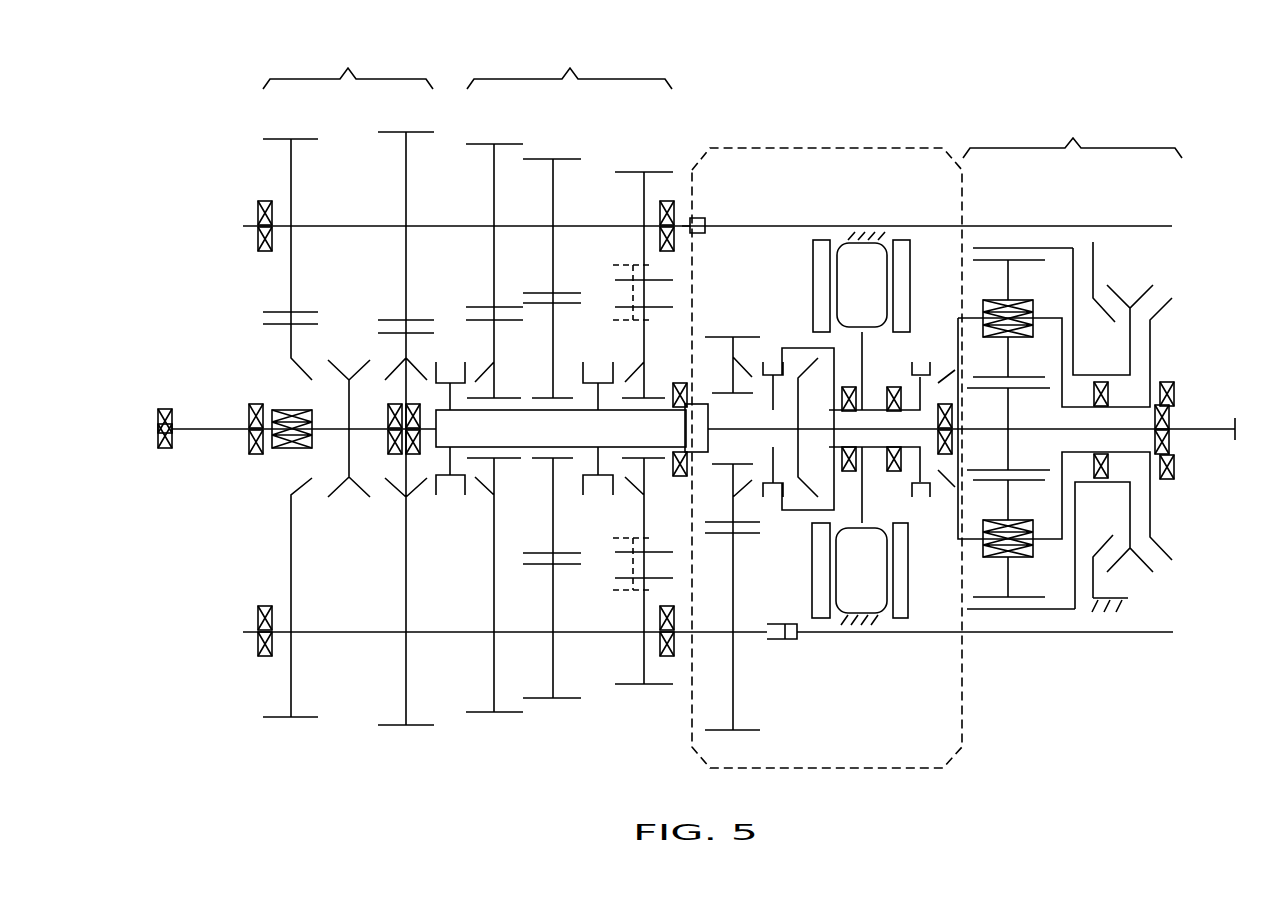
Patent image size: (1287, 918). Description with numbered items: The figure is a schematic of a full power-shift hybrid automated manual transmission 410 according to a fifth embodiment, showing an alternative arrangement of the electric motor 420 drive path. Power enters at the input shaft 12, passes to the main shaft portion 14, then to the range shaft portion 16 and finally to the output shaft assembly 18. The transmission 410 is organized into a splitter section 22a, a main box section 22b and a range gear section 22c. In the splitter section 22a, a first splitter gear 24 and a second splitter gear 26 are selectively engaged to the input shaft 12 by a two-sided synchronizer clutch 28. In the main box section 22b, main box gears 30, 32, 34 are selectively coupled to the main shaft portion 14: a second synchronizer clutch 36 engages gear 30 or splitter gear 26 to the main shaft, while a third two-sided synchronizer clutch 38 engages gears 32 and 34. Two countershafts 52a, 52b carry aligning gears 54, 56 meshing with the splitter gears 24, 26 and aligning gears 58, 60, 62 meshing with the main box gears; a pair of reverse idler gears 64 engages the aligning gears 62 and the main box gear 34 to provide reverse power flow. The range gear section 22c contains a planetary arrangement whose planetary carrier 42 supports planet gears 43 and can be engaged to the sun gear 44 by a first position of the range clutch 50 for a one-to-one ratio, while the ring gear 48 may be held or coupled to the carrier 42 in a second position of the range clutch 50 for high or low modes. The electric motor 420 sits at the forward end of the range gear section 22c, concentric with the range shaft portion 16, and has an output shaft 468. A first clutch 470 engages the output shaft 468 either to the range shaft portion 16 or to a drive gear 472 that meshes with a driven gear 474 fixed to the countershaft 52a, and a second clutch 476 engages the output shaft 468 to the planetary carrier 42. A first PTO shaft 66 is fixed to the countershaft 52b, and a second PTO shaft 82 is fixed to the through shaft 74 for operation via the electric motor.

The input shaft 12 is at (215, 430).
The main shaft portion 14 is at (523, 410).
The range shaft portion 16 is at (1065, 430).
The output shaft assembly 18 is at (1198, 428).
The splitter section 22a is at (348, 67).
The main box section 22b is at (569, 67).
The range gear section 22c is at (1072, 136).
The first splitter gear 24 is at (303, 324).
The second splitter gear 26 is at (414, 333).
The two-sided synchronizer clutch 28 is at (350, 506).
The main box gear 30 is at (503, 320).
The main box gear 32 is at (563, 303).
The main box gear 34 is at (665, 307).
The second synchronizer clutch 36 is at (450, 514).
The third two-sided synchronizer clutch 38 is at (598, 514).
The planetary carrier 42 is at (960, 318).
The planet gears 43 is at (983, 258).
The sun gear 44 is at (1015, 390).
The ring gear 48 is at (1052, 248).
The range clutch 50 is at (1148, 272).
The countershaft 52a is at (327, 632).
The countershaft 52b is at (372, 226).
The aligning gear 54 is at (300, 139).
The aligning gear 56 is at (392, 132).
The aligning gear 58 is at (505, 144).
The aligning gear 60 is at (570, 159).
The aligning gear 62 is at (633, 172).
The reverse idler gears 64 is at (630, 322).
The first PTO shaft 66 is at (1148, 226).
The through shaft 74 is at (618, 632).
The second PTO shaft 82 is at (1015, 632).
The hybrid transmission 410 is at (838, 108).
The electric motor 420 is at (870, 208).
The output shaft 468 is at (873, 410).
The first clutch 470 is at (774, 342).
The drive gear 472 is at (722, 337).
The driven gear 474 is at (733, 732).
The second clutch 476 is at (924, 514).